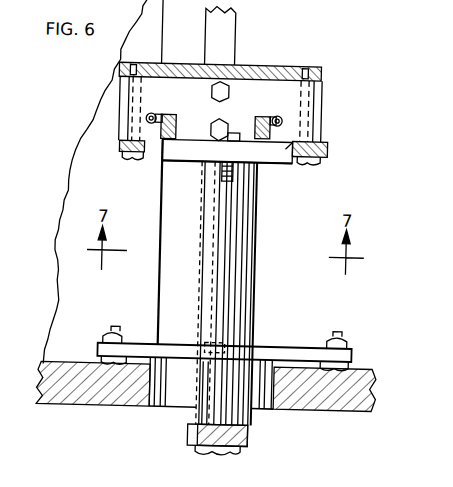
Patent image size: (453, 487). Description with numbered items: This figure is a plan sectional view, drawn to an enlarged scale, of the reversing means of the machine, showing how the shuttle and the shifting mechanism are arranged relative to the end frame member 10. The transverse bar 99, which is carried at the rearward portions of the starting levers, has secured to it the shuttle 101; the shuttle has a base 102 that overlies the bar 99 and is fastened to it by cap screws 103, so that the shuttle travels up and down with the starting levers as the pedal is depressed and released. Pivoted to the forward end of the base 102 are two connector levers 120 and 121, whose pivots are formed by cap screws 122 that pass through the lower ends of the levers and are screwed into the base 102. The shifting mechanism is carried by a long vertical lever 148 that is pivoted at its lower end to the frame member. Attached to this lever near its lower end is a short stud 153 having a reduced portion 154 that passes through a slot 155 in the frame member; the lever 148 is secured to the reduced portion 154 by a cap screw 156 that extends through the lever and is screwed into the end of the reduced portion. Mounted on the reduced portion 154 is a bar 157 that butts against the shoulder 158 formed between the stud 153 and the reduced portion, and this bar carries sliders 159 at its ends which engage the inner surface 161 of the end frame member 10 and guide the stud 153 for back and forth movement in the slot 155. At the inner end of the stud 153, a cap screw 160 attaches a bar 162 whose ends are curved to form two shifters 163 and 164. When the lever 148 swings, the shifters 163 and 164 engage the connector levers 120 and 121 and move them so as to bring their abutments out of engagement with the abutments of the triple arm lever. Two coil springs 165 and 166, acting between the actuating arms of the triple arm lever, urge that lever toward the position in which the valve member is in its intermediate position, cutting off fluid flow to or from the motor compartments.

The vertical frame member 10 is at (77, 390).
The transverse bar 99 is at (213, 47).
The shuttle 101 is at (317, 68).
The base 102 is at (310, 94).
The cap screws 103 is at (210, 133).
The connector lever 120 is at (117, 146).
The connector lever 121 is at (327, 144).
The cap screws 122 is at (126, 157).
The long vertical lever 148 is at (203, 437).
The short stud 153 is at (239, 292).
The reduced portion 154 is at (221, 385).
The slot 155 is at (252, 398).
The cap screw 156 is at (245, 453).
The bar 157 is at (271, 354).
The shoulder 158 is at (202, 343).
The sliders 159 is at (115, 363).
The cap screw 160 is at (209, 126).
The inner surface 161 is at (359, 402).
The bar 162 is at (258, 162).
The shifter 163 is at (158, 167).
The shifter 164 is at (292, 146).
The coil spring 165 is at (143, 119).
The coil spring 166 is at (274, 115).